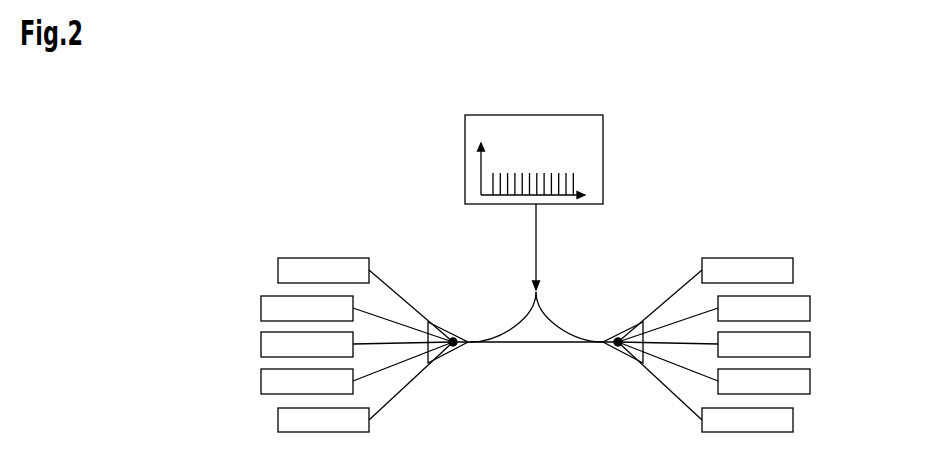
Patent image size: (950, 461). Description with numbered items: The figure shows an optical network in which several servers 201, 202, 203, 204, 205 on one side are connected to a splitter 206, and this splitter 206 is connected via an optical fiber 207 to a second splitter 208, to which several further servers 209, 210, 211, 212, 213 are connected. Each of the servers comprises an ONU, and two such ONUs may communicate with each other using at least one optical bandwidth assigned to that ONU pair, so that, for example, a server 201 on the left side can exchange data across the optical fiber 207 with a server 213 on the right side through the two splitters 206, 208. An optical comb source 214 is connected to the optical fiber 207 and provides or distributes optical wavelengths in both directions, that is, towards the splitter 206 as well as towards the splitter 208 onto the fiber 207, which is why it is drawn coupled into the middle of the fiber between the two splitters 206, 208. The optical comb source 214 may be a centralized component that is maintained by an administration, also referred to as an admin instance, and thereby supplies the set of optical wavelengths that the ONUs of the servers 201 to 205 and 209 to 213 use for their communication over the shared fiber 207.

The server 201 is at (278, 271).
The server 202 is at (261, 309).
The server 203 is at (261, 344).
The server 204 is at (261, 382).
The server 205 is at (278, 420).
The splitter 206 is at (457, 333).
The optical fiber 207 is at (539, 345).
The splitter 208 is at (612, 337).
The server 209 is at (793, 270).
The server 210 is at (810, 308).
The server 211 is at (810, 344).
The server 212 is at (810, 382).
The server 213 is at (793, 420).
The optical comb source 214 is at (603, 159).